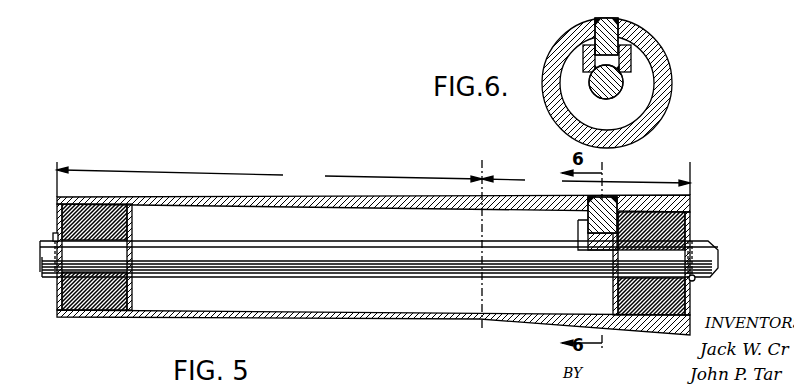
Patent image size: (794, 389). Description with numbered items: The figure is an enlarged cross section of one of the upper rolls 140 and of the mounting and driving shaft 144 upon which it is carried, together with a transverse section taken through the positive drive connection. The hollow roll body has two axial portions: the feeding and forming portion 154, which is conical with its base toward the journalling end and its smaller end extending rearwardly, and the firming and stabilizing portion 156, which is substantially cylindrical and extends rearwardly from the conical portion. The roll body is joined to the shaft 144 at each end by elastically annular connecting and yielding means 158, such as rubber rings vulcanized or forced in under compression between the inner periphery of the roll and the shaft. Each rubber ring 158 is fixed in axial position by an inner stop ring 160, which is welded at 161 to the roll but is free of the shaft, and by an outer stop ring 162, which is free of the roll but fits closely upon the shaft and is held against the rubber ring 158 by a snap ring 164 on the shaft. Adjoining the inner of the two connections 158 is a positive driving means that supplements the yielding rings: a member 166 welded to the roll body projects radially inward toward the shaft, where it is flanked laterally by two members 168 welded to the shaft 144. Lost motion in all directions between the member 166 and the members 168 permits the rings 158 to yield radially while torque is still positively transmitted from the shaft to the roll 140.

In FIG. 5, the upper roll 140 is at (334, 320).
In FIG. 5, the shaft 144 is at (458, 273).
In FIG. 6, the shaft 144 is at (623, 88).
In FIG. 5, the feeding and forming portion 154 is at (586, 178).
In FIG. 5, the firming and stabilizing portion 156 is at (269, 179).
In FIG. 5, the elastically annular connecting and yielding means 158 is at (133, 232).
In FIG. 5, the inner stop ring 160 is at (133, 298).
In FIG. 5, the weld 161 is at (129, 204).
In FIG. 5, the outer stop ring 162 is at (57, 220).
In FIG. 5, the snap ring 164 is at (55, 276).
In FIG. 5, the positive driving member 166 is at (603, 197).
In FIG. 6, the positive driving member 166 is at (620, 22).
In FIG. 5, the shaft driving member 168 is at (578, 225).
In FIG. 6, the shaft driving member 168 is at (631, 60).